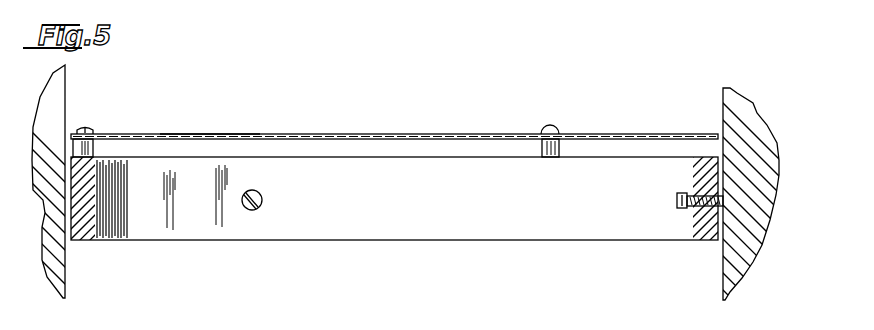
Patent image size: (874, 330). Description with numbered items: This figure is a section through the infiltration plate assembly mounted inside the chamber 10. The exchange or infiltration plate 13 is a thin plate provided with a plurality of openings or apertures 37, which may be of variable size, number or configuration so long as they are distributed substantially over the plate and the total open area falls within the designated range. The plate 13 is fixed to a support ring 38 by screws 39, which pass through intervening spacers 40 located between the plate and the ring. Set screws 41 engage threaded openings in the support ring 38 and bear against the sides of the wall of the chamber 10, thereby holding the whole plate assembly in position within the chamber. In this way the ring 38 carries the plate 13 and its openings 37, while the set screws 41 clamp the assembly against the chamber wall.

The chamber 10 is at (68, 113).
The exchange or infiltration plate 13 is at (345, 134).
The openings or apertures 37 is at (238, 135).
The support ring 38 is at (95, 200).
The screws 39 is at (553, 128).
The spacers 40 is at (95, 153).
The set screws 41 is at (676, 196).